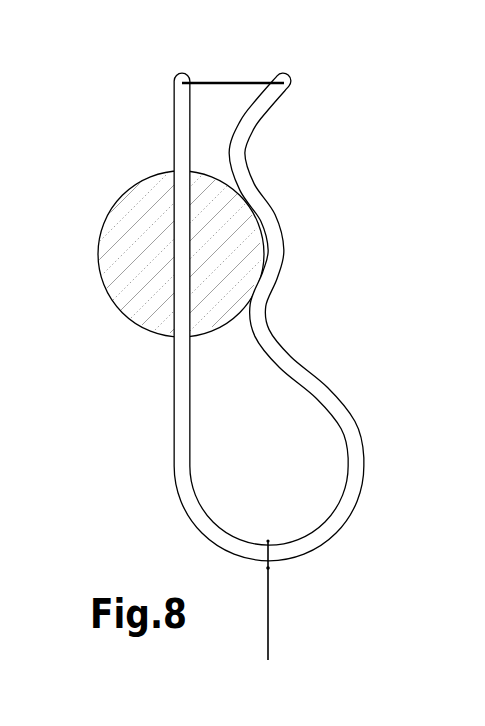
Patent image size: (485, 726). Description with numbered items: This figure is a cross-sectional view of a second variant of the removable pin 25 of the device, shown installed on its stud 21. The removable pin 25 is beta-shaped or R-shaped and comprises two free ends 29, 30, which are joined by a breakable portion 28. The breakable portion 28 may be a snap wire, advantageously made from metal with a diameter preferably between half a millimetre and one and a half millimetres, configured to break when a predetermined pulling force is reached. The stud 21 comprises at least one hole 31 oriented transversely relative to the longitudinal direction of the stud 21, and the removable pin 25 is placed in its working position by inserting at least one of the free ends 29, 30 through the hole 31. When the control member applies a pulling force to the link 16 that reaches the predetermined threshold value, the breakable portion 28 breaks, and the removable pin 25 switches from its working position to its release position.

The link 16 is at (270, 598).
The stud 21 is at (133, 208).
The removable pin 25 is at (288, 244).
The breakable portion 28 is at (240, 82).
The free end 29 is at (180, 74).
The free end 30 is at (288, 75).
The hole 31 is at (173, 265).